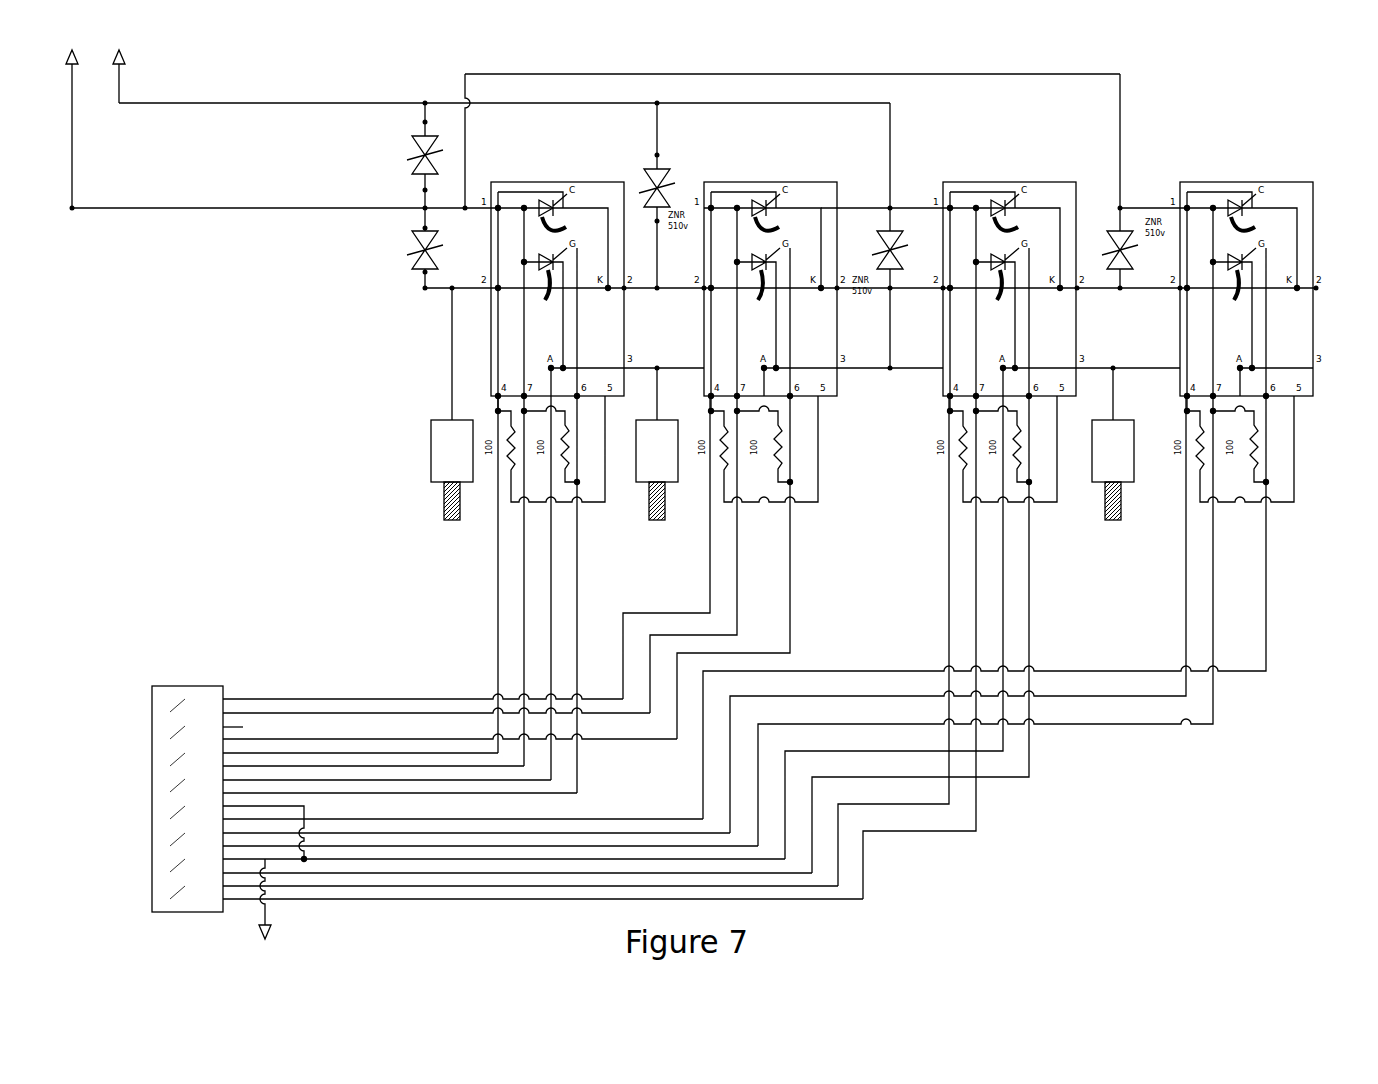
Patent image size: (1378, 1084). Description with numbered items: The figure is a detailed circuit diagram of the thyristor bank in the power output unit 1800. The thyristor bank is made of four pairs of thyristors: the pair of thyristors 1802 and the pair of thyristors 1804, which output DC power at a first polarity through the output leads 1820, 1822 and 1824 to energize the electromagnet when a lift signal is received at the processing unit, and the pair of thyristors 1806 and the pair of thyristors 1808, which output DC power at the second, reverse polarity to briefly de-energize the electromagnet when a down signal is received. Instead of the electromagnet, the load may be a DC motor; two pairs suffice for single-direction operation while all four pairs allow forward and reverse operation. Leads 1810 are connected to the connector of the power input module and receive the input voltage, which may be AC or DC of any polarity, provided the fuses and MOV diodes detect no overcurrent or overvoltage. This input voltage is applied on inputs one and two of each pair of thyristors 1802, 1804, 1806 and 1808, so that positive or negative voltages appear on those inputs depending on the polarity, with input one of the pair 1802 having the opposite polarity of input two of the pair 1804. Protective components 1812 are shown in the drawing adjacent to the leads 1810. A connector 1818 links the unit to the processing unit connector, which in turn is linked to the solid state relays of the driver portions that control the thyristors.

The power output unit 1800 is at (1224, 70).
The pair of thyristors 1802 is at (603, 180).
The pair of thyristors 1804 is at (816, 180).
The pair of thyristors 1806 is at (1055, 180).
The pair of thyristors 1808 is at (1292, 180).
The leads 1810 is at (134, 69).
The varistors 1812 is at (415, 165).
The connector 1818 is at (181, 685).
The output lead 1820 is at (648, 497).
The output lead 1822 is at (1103, 497).
The output lead 1824 is at (443, 497).